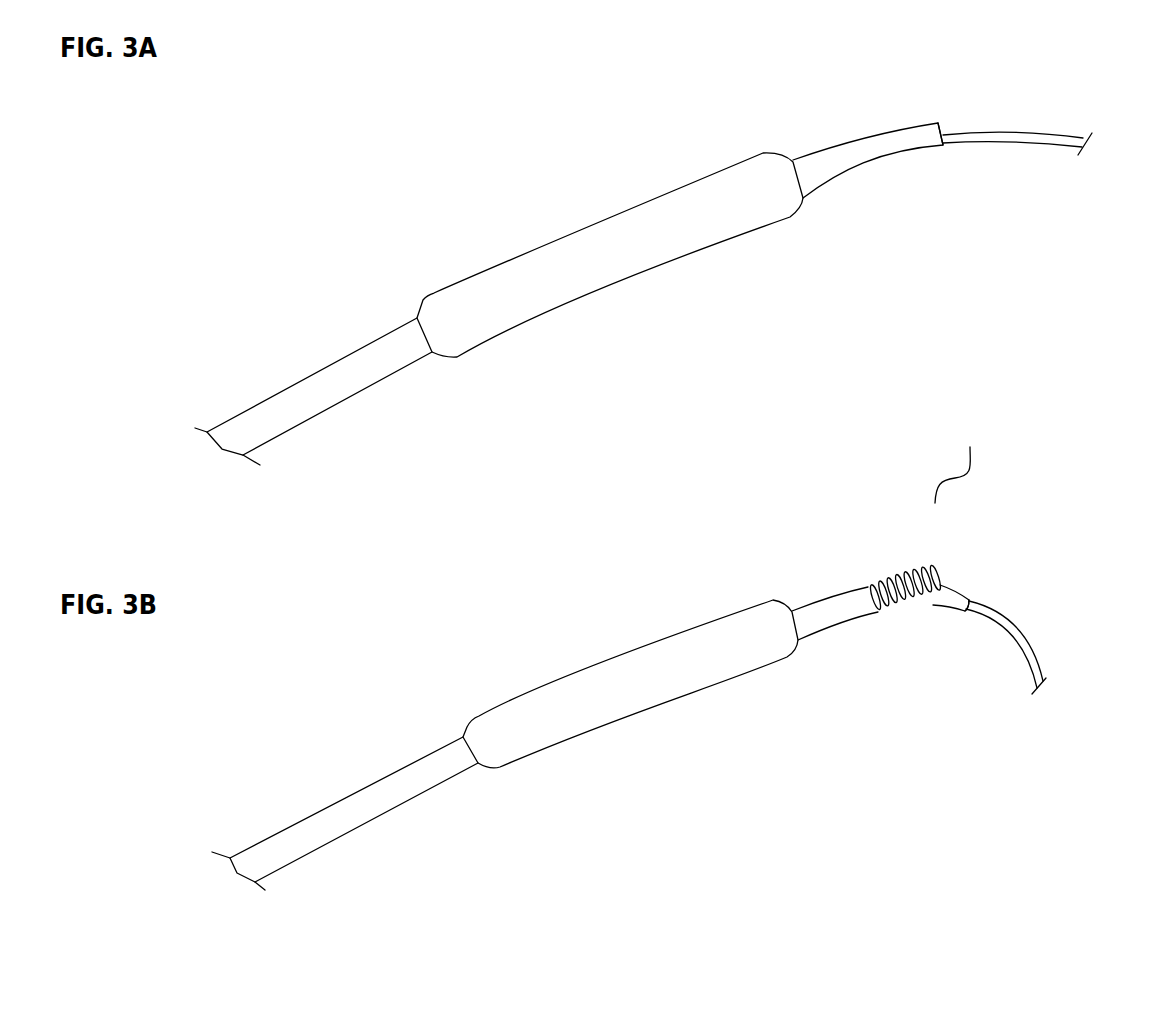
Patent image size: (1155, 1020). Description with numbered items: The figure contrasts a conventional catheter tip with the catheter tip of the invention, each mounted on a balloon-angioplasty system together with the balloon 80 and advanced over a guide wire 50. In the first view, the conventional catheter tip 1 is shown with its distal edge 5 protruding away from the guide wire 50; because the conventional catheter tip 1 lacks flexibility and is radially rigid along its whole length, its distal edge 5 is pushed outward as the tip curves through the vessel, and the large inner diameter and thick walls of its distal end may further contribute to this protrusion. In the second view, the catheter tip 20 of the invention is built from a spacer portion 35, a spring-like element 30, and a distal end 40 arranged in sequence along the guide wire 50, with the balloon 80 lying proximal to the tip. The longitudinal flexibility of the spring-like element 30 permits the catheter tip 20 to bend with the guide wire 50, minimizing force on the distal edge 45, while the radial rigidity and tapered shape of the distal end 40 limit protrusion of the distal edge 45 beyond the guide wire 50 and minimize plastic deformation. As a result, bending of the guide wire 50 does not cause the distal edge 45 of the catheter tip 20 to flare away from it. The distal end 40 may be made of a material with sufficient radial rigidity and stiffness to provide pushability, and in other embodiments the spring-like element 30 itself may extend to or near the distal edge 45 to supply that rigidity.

In FIG. 3A, the conventional catheter tip 1 is at (830, 150).
In FIG. 3A, the distal edge 5 is at (938, 120).
In FIG. 3B, the catheter tip 20 is at (966, 451).
In FIG. 3B, the spring-like element 30 is at (893, 582).
In FIG. 3B, the spacer portion 35 is at (828, 600).
In FIG. 3B, the distal end 40 is at (957, 595).
In FIG. 3B, the distal edge 45 is at (967, 608).
In FIG. 3A, the guide wire 50 is at (1032, 137).
In FIG. 3B, the guide wire 50 is at (1020, 645).
In FIG. 3A, the balloon 80 is at (575, 247).
In FIG. 3B, the balloon 80 is at (633, 663).